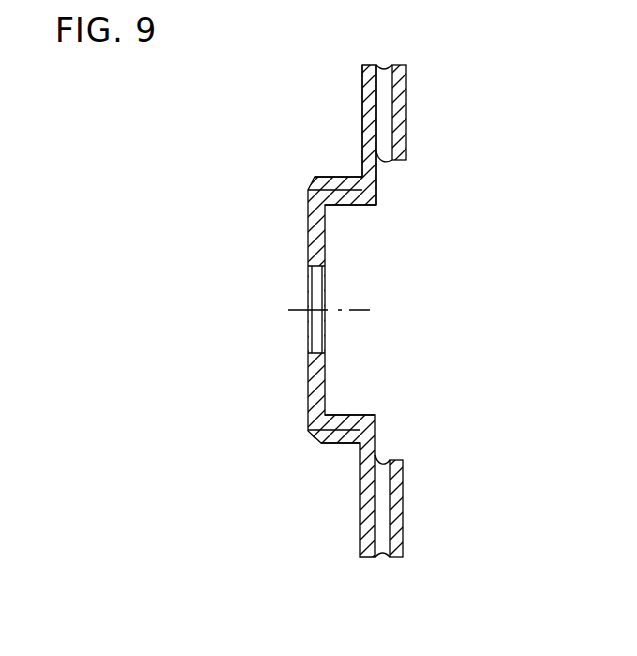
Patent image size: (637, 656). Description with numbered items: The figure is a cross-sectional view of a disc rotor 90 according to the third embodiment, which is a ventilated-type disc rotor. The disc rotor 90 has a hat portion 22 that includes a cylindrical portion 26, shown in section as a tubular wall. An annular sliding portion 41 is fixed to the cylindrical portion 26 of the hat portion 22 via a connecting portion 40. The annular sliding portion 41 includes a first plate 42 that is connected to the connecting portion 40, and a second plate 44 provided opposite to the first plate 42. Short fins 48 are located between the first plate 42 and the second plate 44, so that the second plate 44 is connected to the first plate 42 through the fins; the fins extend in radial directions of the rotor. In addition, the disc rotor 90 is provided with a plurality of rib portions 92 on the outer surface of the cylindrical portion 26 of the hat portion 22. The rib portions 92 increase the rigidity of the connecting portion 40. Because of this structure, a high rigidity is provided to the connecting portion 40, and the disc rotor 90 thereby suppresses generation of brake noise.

The hat portion 22 is at (309, 378).
The cylindrical portion 26 is at (345, 420).
The connecting portion 40 is at (373, 187).
The annular sliding portion 41 is at (413, 122).
The first plate 42 is at (362, 82).
The second plate 44 is at (406, 82).
The short fins 48 is at (382, 158).
The disc rotor 90 is at (304, 222).
The rib portions 92 is at (333, 180).